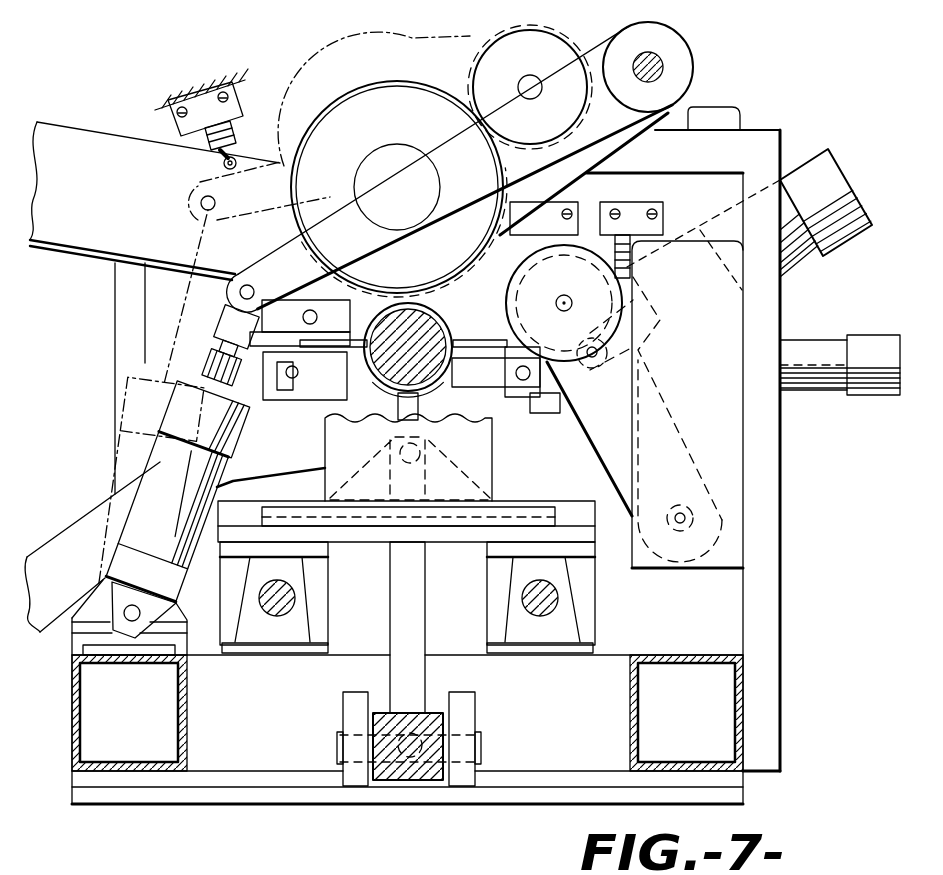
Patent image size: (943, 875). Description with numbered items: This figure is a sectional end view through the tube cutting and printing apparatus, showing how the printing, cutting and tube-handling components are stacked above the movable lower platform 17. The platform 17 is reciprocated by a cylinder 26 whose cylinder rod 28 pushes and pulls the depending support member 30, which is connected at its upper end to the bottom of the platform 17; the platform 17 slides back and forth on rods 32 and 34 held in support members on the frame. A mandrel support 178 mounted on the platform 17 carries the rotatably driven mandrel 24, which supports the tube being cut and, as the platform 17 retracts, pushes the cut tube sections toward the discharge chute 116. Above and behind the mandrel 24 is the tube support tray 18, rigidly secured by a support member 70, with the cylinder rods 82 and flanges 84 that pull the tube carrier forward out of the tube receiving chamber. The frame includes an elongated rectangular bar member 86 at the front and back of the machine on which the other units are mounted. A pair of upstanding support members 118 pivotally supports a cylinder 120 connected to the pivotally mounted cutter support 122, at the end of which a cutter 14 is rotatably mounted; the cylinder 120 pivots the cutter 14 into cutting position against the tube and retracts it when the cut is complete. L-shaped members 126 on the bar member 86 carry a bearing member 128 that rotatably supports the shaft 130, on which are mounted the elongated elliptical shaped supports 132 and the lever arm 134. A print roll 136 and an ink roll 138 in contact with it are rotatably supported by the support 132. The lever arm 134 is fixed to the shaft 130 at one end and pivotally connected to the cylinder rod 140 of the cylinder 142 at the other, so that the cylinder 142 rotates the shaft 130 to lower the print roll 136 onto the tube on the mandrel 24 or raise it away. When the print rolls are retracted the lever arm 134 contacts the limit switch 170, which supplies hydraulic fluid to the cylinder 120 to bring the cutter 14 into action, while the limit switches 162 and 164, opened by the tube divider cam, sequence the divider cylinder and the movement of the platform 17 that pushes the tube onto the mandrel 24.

The cutter 14 is at (528, 266).
The movable lower platform 17 is at (375, 542).
The tube support tray 18 is at (87, 253).
The mandrel 24 is at (443, 343).
The cylinder 26 is at (400, 778).
The cylinder rod 28 is at (413, 712).
The depending support member 30 is at (418, 570).
The rod 32 is at (523, 598).
The rod 34 is at (295, 602).
The support member 70 is at (158, 453).
The cylinder rod 82 is at (292, 379).
The flange 84 is at (340, 373).
The elongated rectangular bar member 86 is at (186, 682).
The discharge chute 116 is at (85, 527).
The upstanding support member 118 is at (733, 463).
The cylinder 120 is at (827, 173).
The cutter support 122 is at (594, 432).
The L-shaped member 126 is at (773, 310).
The bearing member 128 is at (700, 113).
The shaft 130 is at (654, 68).
The elongated elliptical shaped support 132 is at (566, 38).
The lever arm 134 is at (452, 162).
The print roll 136 is at (380, 97).
The ink roll 138 is at (548, 48).
The cylinder rod 140 is at (250, 347).
The cylinder 142 is at (163, 462).
The limit switch 162 is at (662, 200).
The limit switch 164 is at (580, 203).
The limit switch 170 is at (236, 90).
The mandrel support 178 is at (485, 468).